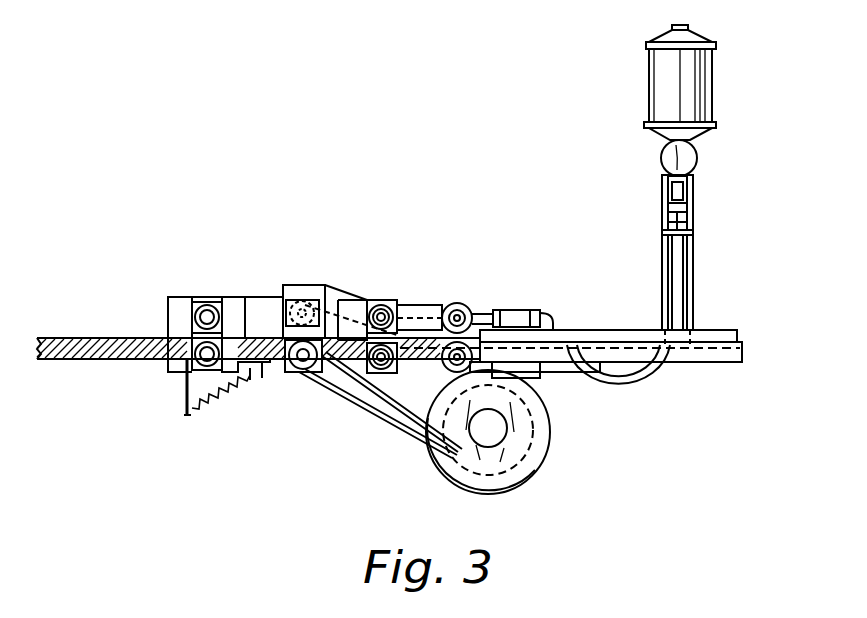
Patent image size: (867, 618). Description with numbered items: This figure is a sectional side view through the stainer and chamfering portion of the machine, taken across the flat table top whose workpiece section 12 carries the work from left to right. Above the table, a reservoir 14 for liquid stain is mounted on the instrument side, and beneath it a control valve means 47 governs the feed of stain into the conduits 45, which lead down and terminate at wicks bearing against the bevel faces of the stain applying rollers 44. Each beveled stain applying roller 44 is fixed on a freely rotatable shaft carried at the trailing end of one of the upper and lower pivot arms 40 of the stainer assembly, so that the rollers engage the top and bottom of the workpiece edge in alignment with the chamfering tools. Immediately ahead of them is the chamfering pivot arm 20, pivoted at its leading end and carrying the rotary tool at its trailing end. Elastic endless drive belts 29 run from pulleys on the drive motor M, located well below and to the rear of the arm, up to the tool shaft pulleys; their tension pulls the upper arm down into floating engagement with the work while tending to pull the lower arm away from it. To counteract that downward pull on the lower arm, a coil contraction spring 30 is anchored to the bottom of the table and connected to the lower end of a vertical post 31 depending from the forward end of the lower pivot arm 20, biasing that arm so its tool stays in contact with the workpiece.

The workpiece section 12 is at (93, 338).
The reservoir 14 is at (710, 74).
The pivot arm 20 is at (262, 305).
The drive belts 29 is at (330, 408).
The coil contraction spring 30 is at (213, 403).
The vertical post 31 is at (185, 397).
The pivot arms 40 is at (416, 318).
The stain applying roller 44 is at (463, 303).
The conduits 45 is at (668, 281).
The control valve means 47 is at (661, 163).
The drive motor M is at (489, 494).